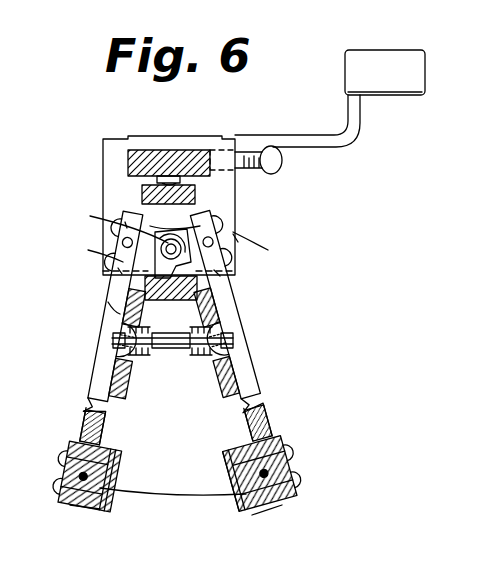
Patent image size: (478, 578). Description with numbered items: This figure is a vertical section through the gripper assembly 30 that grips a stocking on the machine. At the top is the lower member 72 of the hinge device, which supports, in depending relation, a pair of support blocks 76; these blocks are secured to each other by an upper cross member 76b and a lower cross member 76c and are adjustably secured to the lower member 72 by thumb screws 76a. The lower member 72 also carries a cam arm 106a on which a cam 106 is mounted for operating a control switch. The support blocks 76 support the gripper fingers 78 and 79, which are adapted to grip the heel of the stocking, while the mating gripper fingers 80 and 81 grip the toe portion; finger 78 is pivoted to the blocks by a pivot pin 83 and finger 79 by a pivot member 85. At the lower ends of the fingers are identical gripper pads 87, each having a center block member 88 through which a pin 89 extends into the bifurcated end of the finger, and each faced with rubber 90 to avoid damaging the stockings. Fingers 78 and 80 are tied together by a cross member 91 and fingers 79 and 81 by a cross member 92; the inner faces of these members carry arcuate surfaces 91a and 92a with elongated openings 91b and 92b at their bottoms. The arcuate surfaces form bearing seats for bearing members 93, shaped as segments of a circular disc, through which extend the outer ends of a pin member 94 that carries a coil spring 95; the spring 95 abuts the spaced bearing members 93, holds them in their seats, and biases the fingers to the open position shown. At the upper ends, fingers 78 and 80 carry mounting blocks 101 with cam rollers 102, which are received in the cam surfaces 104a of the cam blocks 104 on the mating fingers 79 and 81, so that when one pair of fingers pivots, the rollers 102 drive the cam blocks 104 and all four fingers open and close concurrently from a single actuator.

The gripper assembly 30 is at (184, 436).
The lower member 72 is at (173, 150).
The support blocks 76 is at (226, 180).
The thumb screws 76a is at (275, 163).
The upper cross member 76b is at (150, 192).
The lower cross member 76c is at (167, 288).
The gripper finger 78 is at (120, 271).
The gripper finger 79 is at (218, 273).
The gripper finger 80 is at (104, 406).
The gripper finger 81 is at (255, 393).
The pivot pin 83 is at (121, 247).
The pivot member 85 is at (236, 238).
The gripper pads 87 is at (86, 508).
The center block member 88 is at (77, 466).
The pin 89 is at (78, 484).
The rubber 90 is at (173, 495).
The cross member 91 is at (113, 377).
The arcuate surface 91a is at (120, 342).
The elongated opening 91b is at (126, 318).
The cross member 92 is at (232, 392).
The arcuate surface 92a is at (238, 347).
The elongated opening 92b is at (226, 326).
The bearing members 93 is at (212, 348).
The pin member 94 is at (176, 340).
The coil spring 95 is at (112, 306).
The mounting blocks 101 is at (125, 225).
The cam rollers 102 is at (170, 250).
The cam blocks 104 is at (190, 230).
The cam surfaces 104a is at (212, 241).
The cam 106 is at (380, 58).
The cam arm 106a is at (360, 129).